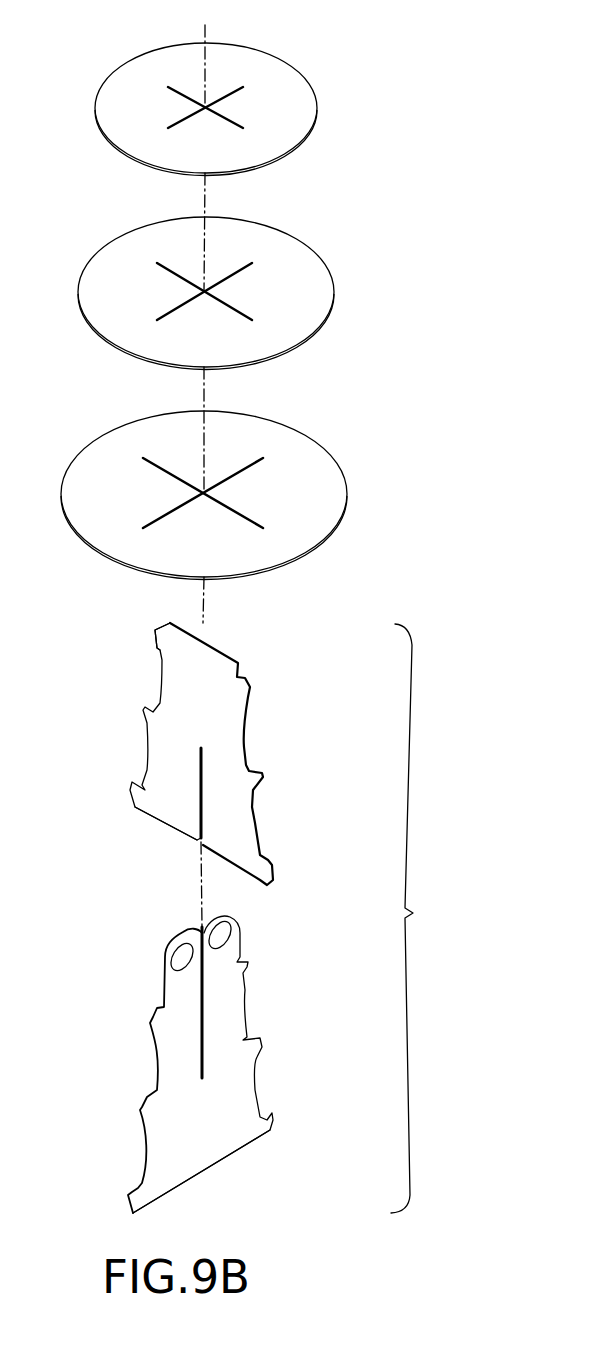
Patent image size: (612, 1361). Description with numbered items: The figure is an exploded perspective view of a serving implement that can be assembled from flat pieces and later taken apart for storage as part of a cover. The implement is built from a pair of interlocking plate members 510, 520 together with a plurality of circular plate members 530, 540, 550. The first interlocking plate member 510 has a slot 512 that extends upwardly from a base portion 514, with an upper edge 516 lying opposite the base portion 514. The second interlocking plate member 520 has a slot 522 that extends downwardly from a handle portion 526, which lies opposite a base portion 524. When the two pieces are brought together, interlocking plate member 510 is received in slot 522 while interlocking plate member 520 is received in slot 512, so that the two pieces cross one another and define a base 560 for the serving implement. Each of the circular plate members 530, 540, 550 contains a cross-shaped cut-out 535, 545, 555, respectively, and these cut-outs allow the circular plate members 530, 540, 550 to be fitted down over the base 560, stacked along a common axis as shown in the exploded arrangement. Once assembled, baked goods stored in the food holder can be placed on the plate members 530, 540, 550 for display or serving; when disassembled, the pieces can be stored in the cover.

The circular plate member 530 is at (262, 97).
The cross-shaped cut-out 535 is at (232, 88).
The circular plate member 540 is at (261, 281).
The cross-shaped cut-out 545 is at (246, 266).
The circular plate member 550 is at (256, 491).
The cross-shaped cut-out 555 is at (258, 462).
The interlocking plate member 510 is at (221, 753).
The slot 512 is at (200, 780).
The base portion 514 is at (167, 807).
The upper edge 516 is at (192, 640).
The interlocking plate member 520 is at (249, 1061).
The slot 522 is at (204, 989).
The base portion 524 is at (208, 1155).
The handle portion 526 is at (226, 920).
The base 560 is at (423, 918).